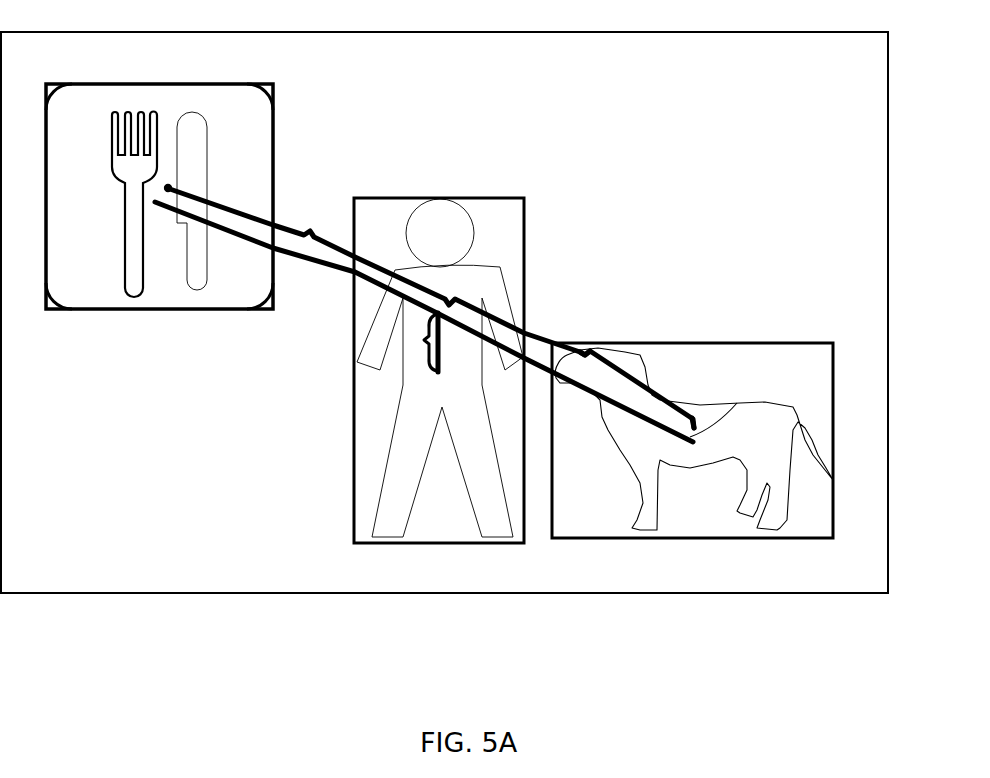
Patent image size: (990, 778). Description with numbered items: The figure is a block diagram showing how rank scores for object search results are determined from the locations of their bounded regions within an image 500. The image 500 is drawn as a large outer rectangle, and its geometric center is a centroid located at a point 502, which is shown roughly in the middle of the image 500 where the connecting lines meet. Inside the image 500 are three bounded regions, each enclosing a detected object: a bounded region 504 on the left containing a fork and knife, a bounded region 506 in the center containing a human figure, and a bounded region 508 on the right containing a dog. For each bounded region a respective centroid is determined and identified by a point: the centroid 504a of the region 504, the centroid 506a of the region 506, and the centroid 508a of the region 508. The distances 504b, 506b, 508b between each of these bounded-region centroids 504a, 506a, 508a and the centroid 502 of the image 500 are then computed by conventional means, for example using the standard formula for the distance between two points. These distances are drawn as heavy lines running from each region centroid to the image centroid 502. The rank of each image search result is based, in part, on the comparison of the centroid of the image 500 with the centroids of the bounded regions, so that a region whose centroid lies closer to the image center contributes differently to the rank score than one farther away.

The image 500 is at (890, 175).
The centroid of the image 502 is at (432, 314).
The bounded region 504 is at (275, 120).
The centroid of bounded region 504a is at (169, 187).
The distance 504b is at (310, 234).
The bounded region 506 is at (525, 215).
The centroid of bounded region 506a is at (438, 372).
The distance 506b is at (425, 340).
The bounded region 508 is at (725, 343).
The centroid of bounded region 508a is at (697, 409).
The distance 508b is at (583, 350).